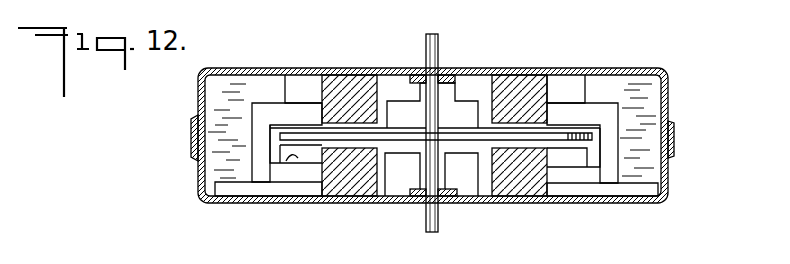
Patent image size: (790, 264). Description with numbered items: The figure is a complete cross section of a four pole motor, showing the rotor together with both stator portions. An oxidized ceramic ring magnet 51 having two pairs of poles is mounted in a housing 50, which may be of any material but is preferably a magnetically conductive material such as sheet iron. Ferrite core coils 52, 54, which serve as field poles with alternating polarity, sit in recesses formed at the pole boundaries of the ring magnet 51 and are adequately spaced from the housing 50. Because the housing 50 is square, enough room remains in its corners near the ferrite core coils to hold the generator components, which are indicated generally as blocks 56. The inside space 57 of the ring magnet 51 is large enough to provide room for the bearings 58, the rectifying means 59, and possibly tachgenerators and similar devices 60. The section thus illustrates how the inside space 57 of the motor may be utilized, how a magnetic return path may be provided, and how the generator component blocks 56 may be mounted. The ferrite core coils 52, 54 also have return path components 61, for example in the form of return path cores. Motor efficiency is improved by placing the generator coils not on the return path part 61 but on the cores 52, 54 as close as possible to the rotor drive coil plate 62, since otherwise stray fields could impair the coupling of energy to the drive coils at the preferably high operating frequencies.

The housing 50 is at (670, 103).
The ring magnet 51 is at (528, 173).
The ferrite core coil 52 is at (568, 150).
The ferrite core coil 54 is at (285, 158).
The generator component blocks 56 is at (228, 92).
The inside space of the ring magnet 57 is at (380, 203).
The bearings 58 is at (423, 69).
The rectifying means 59 is at (460, 117).
The tachgenerators and similar devices 60 is at (468, 182).
The return path components 61 is at (262, 153).
The rotor drive coil plate 62 is at (318, 134).